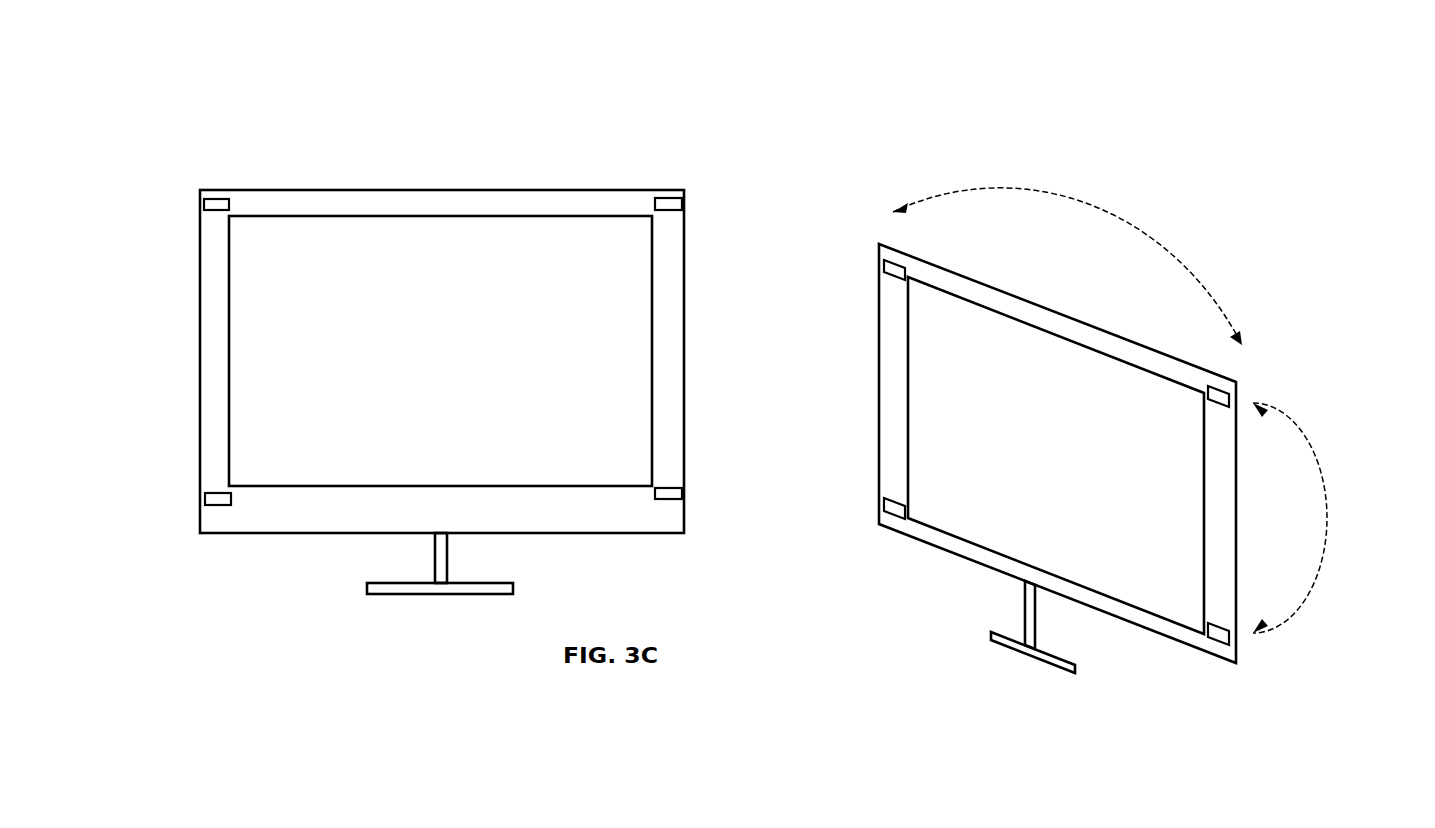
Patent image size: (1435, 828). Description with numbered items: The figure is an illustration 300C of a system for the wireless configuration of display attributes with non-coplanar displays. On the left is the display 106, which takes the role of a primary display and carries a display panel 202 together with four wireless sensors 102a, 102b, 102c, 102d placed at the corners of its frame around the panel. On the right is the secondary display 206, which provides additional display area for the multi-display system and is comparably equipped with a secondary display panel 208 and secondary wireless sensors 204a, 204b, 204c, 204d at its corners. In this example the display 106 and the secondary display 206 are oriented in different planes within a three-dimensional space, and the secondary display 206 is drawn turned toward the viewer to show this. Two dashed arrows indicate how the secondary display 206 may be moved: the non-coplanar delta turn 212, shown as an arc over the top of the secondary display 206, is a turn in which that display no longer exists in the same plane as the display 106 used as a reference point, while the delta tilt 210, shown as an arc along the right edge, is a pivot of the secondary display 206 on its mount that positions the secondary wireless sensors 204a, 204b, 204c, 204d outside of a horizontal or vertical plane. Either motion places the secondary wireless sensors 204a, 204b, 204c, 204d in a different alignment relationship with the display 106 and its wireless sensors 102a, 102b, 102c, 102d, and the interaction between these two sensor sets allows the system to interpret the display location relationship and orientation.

The illustration of a system for the wireless configuration of display attributes wi 300C is at (1168, 76).
The display 106 is at (592, 188).
The display panel 202 is at (360, 233).
The wireless sensor 102a is at (215, 205).
The wireless sensor 102b is at (220, 495).
The wireless sensor 102c is at (670, 200).
The wireless sensor 102d is at (665, 500).
The secondary display 206 is at (1098, 328).
The secondary display panel 208 is at (1000, 335).
The secondary wireless sensor 204a is at (890, 270).
The secondary wireless sensor 204b is at (890, 510).
The secondary wireless sensor 204c is at (1218, 398).
The secondary wireless sensor 204d is at (1222, 637).
The delta tilt 210 is at (1327, 515).
The non-coplanar delta turn 212 is at (1108, 213).